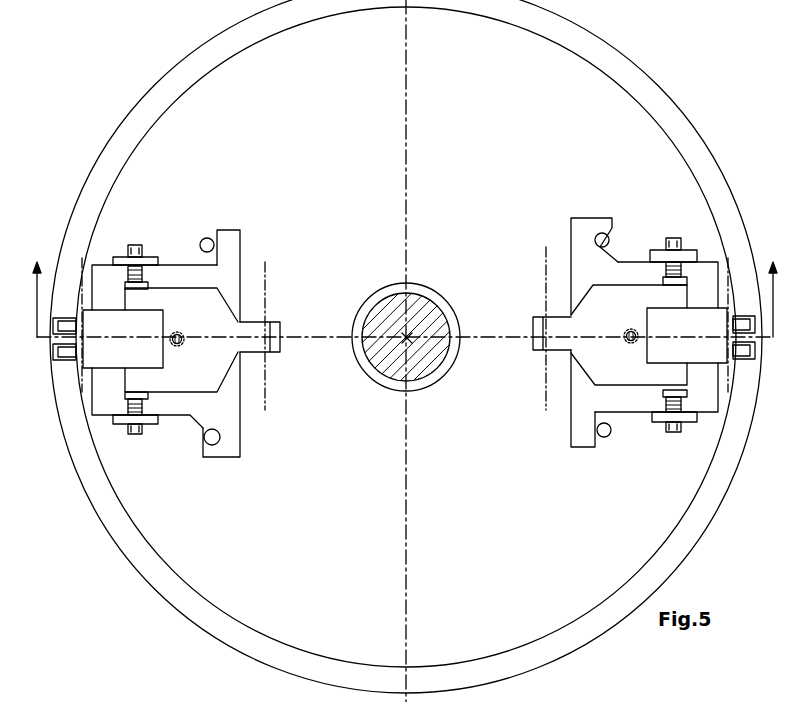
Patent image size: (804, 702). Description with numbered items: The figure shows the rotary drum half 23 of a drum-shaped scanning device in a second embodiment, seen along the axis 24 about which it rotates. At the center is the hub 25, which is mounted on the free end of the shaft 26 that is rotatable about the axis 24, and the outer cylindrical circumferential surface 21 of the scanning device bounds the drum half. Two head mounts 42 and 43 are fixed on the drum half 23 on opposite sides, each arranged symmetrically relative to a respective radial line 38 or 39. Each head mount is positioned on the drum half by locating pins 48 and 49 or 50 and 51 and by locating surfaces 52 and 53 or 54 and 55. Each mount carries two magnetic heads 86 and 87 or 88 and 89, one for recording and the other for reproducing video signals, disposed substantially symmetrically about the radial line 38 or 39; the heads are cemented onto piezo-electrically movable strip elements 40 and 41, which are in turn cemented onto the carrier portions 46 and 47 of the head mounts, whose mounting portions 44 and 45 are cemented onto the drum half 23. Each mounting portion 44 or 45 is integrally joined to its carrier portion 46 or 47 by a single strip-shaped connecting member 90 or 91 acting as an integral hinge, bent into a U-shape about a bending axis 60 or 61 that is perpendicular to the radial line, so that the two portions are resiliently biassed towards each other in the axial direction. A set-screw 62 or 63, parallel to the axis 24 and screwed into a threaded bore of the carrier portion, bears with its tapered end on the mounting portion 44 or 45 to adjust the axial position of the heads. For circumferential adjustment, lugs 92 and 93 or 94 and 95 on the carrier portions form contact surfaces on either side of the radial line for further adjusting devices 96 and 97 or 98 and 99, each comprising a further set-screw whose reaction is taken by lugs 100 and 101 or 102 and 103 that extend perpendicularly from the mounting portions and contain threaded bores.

The circumferential surface 21 is at (121, 557).
The rotary drum half 23 is at (200, 107).
The axis 24 is at (412, 343).
The hub 25 is at (380, 383).
The shaft 26 is at (420, 303).
The radial line 38 is at (325, 336).
The radial line 39 is at (478, 336).
The piezo-electrically movable strip element 40 is at (155, 320).
The piezo-electrically movable strip element 41 is at (665, 320).
The head mount 42 is at (262, 235).
The head mount 43 is at (548, 234).
The mounting portion 44 is at (190, 400).
The mounting portion 45 is at (610, 398).
The carrier portion 46 is at (225, 350).
The carrier portion 47 is at (593, 350).
The locating pin 48 is at (203, 238).
The locating pin 49 is at (212, 440).
The locating pin 50 is at (606, 437).
The locating pin 51 is at (598, 234).
The locating surface 52 is at (215, 230).
The locating surface 53 is at (200, 429).
The locating surface 54 is at (603, 437).
The locating surface 55 is at (607, 217).
The bending axis 60 is at (268, 282).
The bending axis 61 is at (545, 287).
The set-screw 62 is at (184, 344).
The set-screw 63 is at (627, 334).
The magnetic head 86 is at (60, 318).
The magnetic head 87 is at (60, 360).
The magnetic head 88 is at (745, 358).
The magnetic head 89 is at (745, 318).
The connecting member 90 is at (277, 343).
The connecting member 91 is at (535, 345).
The lug 92 is at (127, 283).
The lug 93 is at (123, 399).
The lug 94 is at (688, 397).
The lug 95 is at (688, 278).
The further adjusting device 96 is at (143, 243).
The further adjusting device 97 is at (137, 434).
The further adjusting device 98 is at (673, 432).
The further adjusting device 99 is at (673, 238).
The lug 100 is at (155, 257).
The lug 101 is at (152, 425).
The lug 102 is at (660, 422).
The lug 103 is at (656, 250).